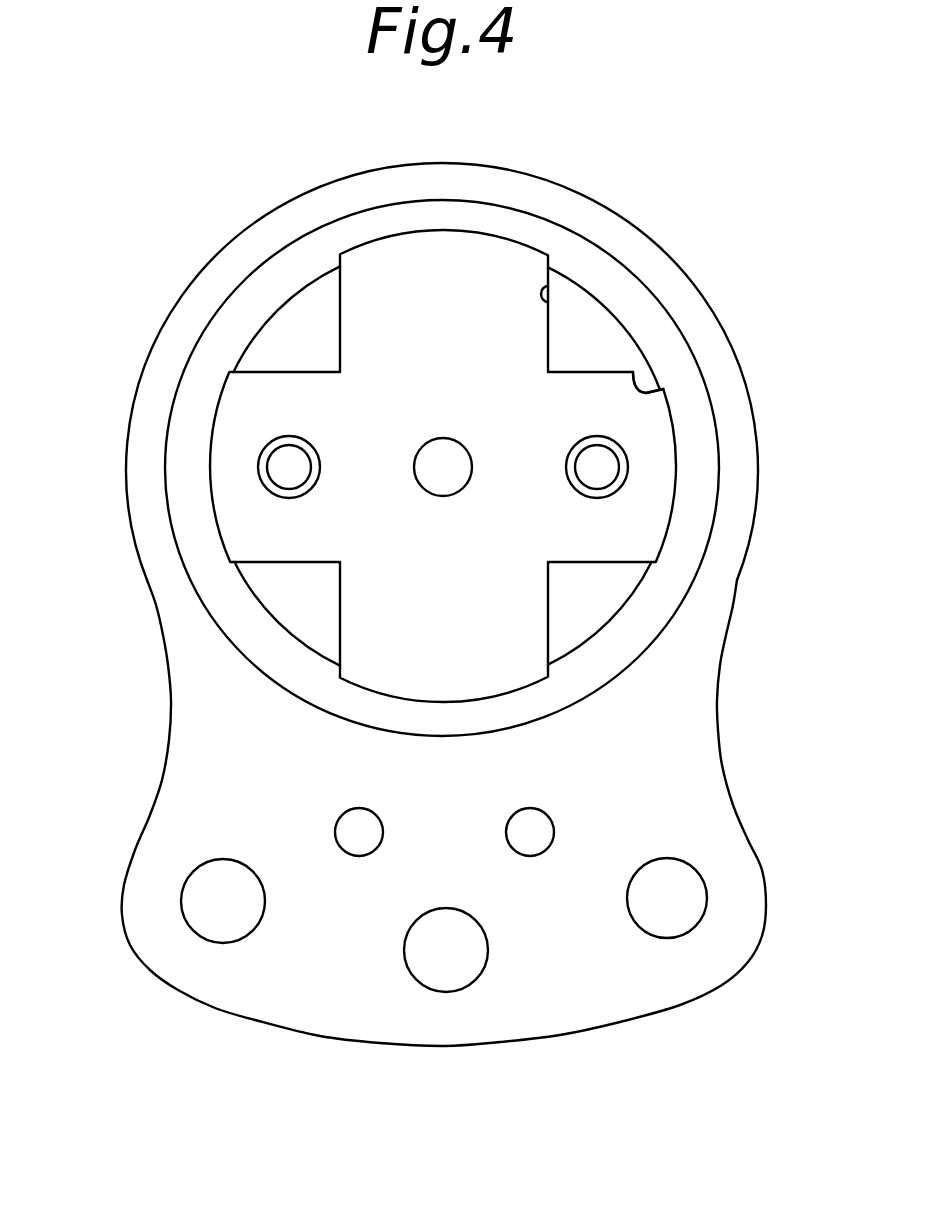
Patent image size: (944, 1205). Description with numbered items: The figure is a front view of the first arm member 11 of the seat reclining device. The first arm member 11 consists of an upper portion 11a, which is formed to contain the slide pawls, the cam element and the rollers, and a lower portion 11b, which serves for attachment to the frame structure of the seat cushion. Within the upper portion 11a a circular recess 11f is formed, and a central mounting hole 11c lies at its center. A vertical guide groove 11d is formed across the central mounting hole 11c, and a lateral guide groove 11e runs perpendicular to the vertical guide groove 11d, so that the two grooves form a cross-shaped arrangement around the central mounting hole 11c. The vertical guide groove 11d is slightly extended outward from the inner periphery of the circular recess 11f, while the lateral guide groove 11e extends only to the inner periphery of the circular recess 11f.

The first arm member 11 is at (313, 190).
The upper portion 11a is at (152, 396).
The lower portion 11b is at (182, 804).
The central mounting hole 11c is at (450, 491).
The vertical guide groove 11d is at (542, 296).
The lateral guide groove 11e is at (665, 386).
The circular recess 11f is at (270, 588).